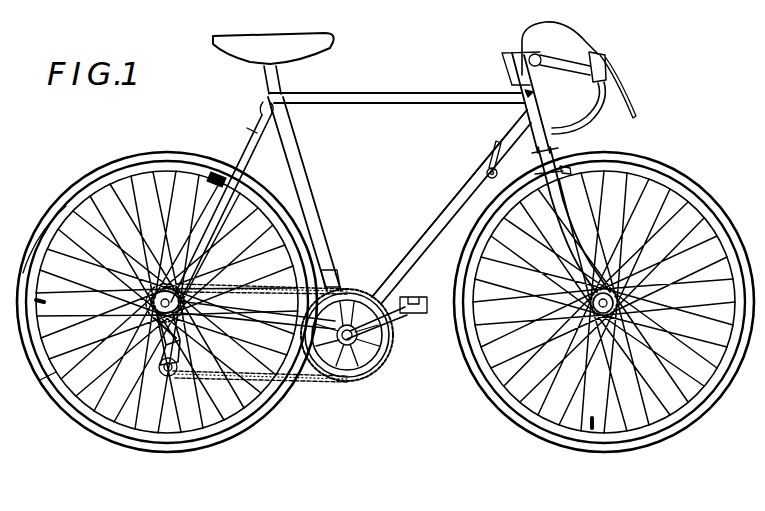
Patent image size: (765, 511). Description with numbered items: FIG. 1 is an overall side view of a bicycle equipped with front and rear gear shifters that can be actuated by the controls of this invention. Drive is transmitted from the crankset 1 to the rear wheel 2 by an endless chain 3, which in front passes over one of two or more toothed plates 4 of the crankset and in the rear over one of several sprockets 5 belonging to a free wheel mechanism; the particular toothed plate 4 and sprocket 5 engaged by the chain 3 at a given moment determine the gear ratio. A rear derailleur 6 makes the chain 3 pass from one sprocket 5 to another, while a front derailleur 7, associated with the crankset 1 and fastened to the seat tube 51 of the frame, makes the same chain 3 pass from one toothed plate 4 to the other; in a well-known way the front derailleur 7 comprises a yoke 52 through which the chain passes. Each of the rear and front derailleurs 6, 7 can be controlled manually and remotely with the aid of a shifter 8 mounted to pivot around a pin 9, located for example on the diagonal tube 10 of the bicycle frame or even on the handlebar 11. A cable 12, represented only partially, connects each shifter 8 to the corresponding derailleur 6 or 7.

The crankset 1 is at (399, 371).
The rear wheel 2 is at (120, 434).
The endless chain 3 is at (270, 388).
The toothed plate 4 is at (357, 385).
The sprocket 5 is at (50, 250).
The rear derailleur 6 is at (44, 380).
The front derailleur 7 is at (352, 268).
The shifter 8 is at (492, 147).
The pin 9 is at (487, 170).
The diagonal tube 10 is at (412, 252).
The handlebar 11 is at (588, 121).
The cable 12 is at (452, 216).
The seat tube 51 is at (300, 177).
The yoke 52 is at (322, 385).